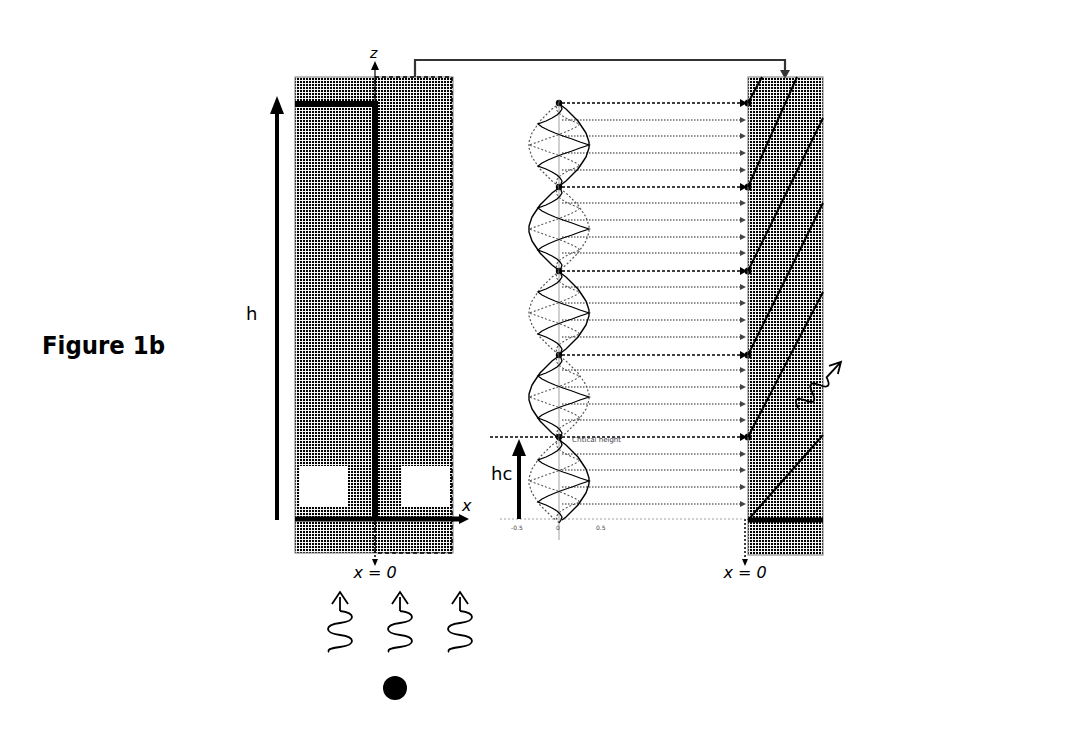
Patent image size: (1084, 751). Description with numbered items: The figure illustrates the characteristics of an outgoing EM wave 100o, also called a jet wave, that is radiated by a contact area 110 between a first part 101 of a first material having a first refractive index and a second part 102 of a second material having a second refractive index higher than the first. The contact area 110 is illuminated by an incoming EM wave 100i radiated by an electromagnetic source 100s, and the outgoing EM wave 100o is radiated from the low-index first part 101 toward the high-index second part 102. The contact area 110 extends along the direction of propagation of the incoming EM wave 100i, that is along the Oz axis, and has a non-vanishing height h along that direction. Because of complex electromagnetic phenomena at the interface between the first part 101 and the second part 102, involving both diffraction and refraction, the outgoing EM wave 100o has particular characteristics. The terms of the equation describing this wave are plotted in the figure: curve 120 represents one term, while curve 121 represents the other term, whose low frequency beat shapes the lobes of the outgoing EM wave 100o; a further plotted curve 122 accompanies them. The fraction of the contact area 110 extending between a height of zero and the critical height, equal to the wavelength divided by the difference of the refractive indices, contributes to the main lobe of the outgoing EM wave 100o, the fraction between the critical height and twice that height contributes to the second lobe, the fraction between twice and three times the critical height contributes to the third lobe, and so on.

The first part 101 is at (320, 194).
The contact area 110 is at (368, 160).
The curve 120 is at (530, 140).
The field envelope 122 is at (545, 103).
The curve 121 is at (566, 508).
The second part 102 is at (808, 492).
The outgoing EM wave 100o is at (852, 372).
The incoming EM wave 100i is at (310, 617).
The electromagnetic source 100s is at (410, 686).